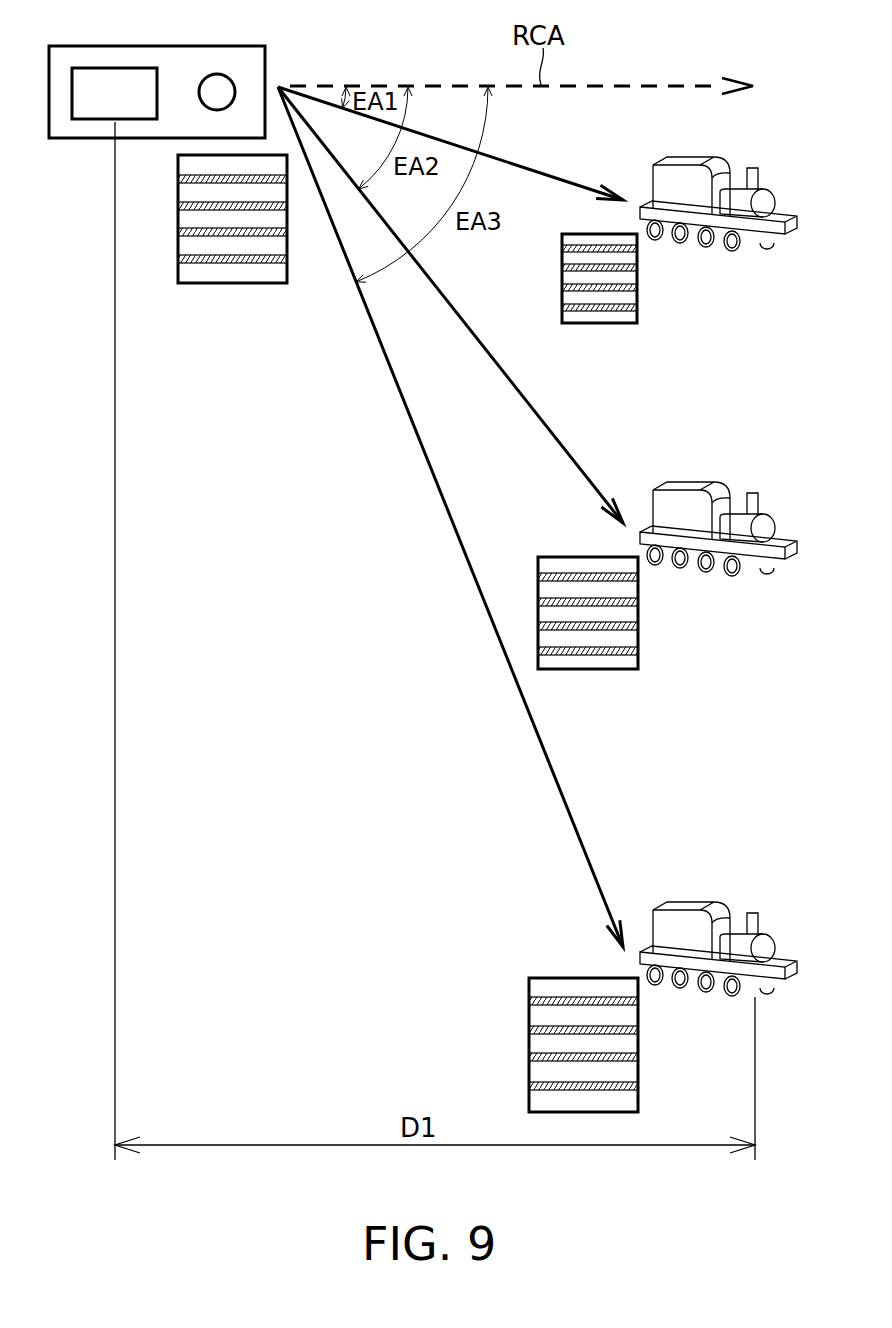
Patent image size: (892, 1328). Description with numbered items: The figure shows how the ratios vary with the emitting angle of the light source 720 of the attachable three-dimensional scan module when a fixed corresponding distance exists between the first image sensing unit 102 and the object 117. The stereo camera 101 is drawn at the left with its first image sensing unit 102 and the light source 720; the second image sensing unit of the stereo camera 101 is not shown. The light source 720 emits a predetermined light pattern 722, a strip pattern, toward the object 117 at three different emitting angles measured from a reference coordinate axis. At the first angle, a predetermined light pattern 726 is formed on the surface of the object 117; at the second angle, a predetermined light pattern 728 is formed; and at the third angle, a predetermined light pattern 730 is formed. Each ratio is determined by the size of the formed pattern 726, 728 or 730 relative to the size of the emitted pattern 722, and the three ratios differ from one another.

The stereo camera 101 is at (153, 46).
The first image sensing unit 102 is at (98, 67).
The light source 720 is at (220, 74).
The predetermined light pattern 722 is at (234, 284).
The predetermined light pattern 726 is at (637, 295).
The predetermined light pattern 728 is at (638, 615).
The predetermined light pattern 730 is at (638, 1040).
The object 117 is at (772, 182).